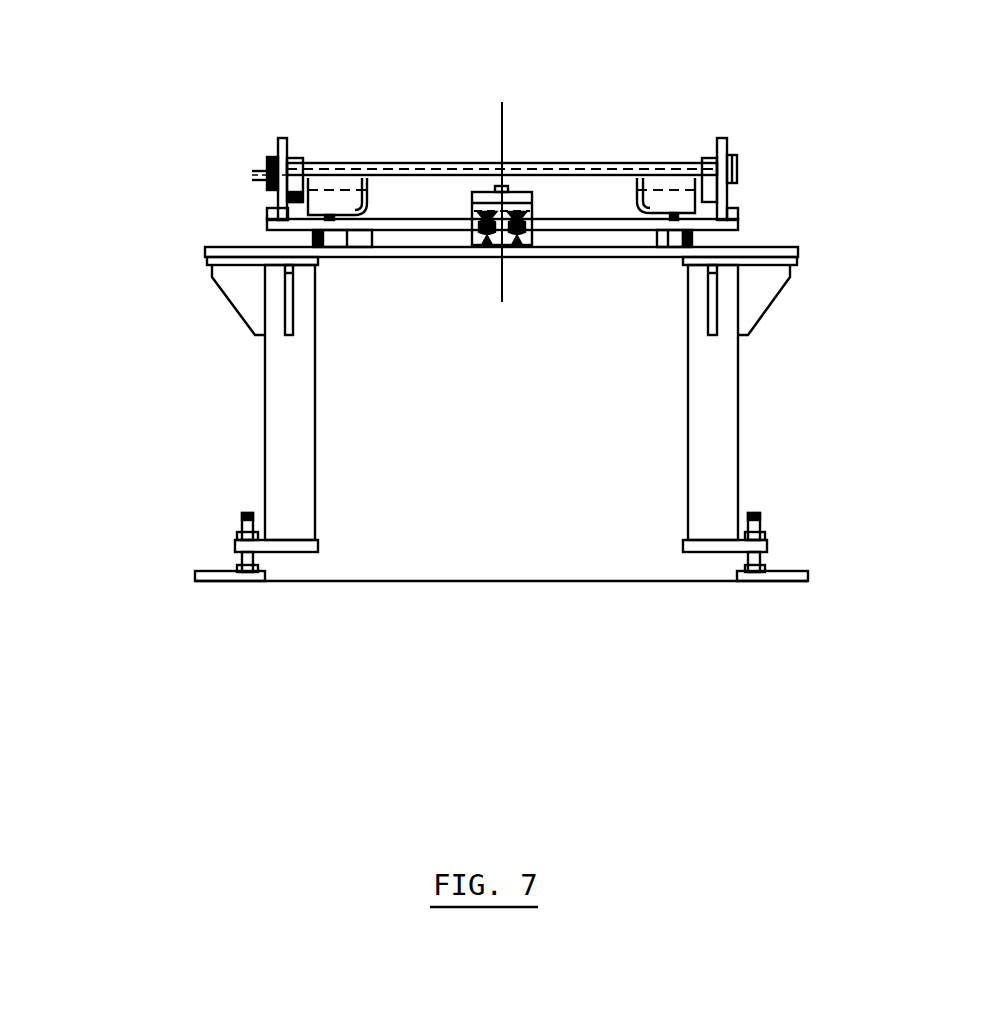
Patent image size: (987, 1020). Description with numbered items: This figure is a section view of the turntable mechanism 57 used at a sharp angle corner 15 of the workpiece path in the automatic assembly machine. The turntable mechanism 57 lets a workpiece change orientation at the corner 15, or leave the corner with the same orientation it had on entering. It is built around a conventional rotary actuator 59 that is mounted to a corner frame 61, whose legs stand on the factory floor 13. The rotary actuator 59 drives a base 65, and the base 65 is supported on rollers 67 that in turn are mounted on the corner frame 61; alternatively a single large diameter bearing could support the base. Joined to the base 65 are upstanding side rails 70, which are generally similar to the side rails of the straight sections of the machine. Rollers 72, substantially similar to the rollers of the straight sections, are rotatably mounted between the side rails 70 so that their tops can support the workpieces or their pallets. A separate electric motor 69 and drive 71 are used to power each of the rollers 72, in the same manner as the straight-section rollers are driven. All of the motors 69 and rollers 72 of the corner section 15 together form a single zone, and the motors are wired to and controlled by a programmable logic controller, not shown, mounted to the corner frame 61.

The factory floor 13 is at (350, 578).
The sharp angle corner 15 is at (580, 409).
The turntable mechanism 57 is at (375, 234).
The rotary actuator 59 is at (515, 248).
The corner frame 61 is at (738, 413).
The base 65 is at (732, 224).
The rollers 67 is at (313, 236).
The electric motor 69 is at (350, 202).
The side rails 70 is at (278, 140).
The drive 71 is at (267, 162).
The rollers 72 is at (520, 165).